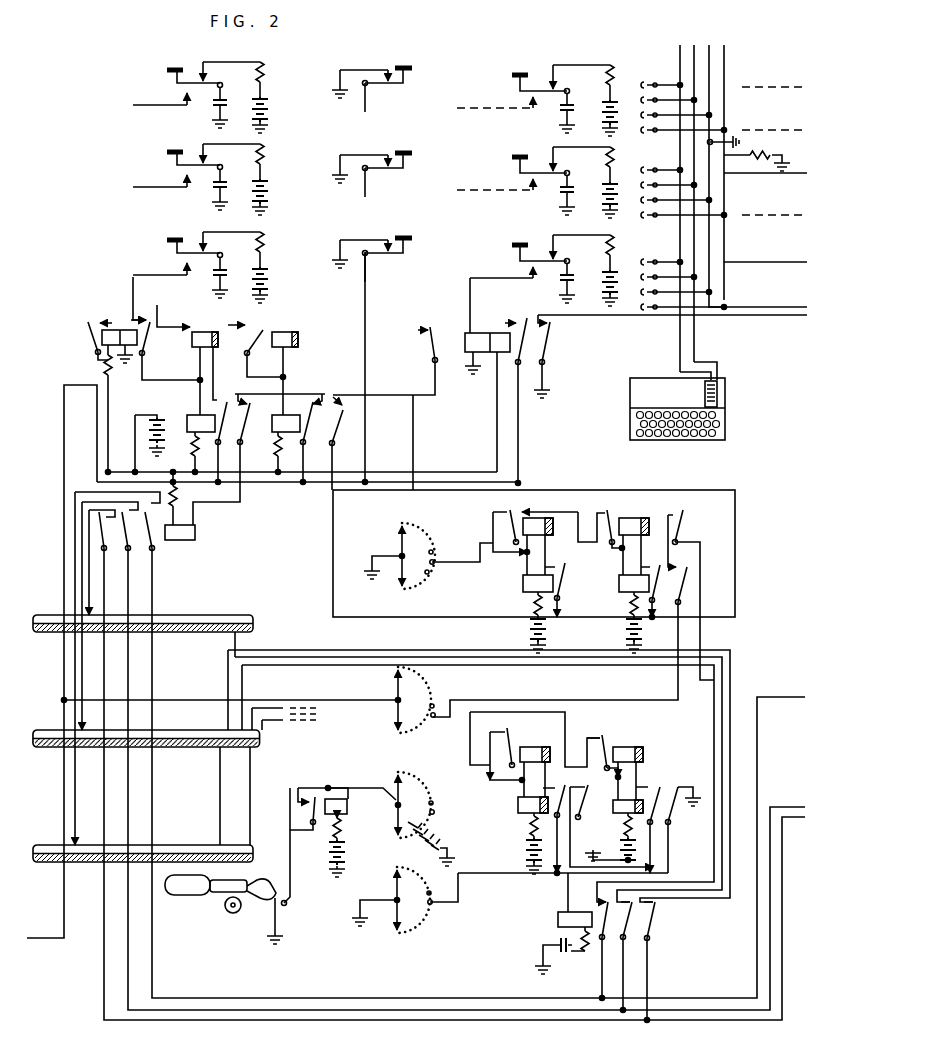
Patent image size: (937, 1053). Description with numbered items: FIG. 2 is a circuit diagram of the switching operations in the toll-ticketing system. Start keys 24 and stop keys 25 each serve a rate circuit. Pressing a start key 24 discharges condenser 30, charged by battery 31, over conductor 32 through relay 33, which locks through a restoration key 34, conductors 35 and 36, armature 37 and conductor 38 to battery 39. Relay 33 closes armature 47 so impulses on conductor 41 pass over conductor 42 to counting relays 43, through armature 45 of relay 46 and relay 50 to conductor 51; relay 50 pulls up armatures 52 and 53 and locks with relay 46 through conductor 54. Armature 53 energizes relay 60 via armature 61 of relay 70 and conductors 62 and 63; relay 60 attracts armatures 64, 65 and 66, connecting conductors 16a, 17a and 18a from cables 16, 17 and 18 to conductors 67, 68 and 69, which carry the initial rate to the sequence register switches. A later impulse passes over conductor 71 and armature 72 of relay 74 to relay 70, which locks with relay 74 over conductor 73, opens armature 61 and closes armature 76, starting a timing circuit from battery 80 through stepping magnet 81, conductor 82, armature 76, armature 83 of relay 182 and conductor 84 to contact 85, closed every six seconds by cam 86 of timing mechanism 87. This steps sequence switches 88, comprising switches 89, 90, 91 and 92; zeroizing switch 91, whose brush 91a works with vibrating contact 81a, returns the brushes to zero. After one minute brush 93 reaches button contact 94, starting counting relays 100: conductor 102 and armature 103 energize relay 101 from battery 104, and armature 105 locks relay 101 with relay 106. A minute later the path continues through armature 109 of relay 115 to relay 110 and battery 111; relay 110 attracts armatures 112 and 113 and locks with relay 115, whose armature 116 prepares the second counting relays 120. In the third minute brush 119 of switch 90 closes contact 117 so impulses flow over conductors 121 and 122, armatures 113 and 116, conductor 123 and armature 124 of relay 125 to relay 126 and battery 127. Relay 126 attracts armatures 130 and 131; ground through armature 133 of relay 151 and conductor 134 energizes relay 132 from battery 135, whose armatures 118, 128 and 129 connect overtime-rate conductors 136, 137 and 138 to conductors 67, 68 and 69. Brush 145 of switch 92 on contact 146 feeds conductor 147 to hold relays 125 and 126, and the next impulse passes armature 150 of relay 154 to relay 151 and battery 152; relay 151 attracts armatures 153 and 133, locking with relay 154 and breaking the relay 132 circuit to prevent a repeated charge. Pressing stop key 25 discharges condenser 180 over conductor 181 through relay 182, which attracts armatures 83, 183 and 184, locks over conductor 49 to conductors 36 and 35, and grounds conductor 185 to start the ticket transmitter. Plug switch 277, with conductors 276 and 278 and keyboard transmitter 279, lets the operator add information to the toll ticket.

The transistor input cell 24 is at (160, 90).
The transistor input cell 25 is at (510, 99).
The transistor cell 34 is at (386, 66).
The capacitor 30 is at (224, 262).
The battery 31 is at (266, 265).
The conductor 32 is at (130, 284).
The conductor 33 is at (100, 320).
The conductor 35 is at (367, 313).
The bus conductor 36 is at (295, 485).
The switch blade 37 is at (88, 342).
The conductor 38 is at (112, 404).
The battery 39 is at (142, 440).
The conductor 41 is at (44, 940).
The conductor 42 is at (162, 316).
The relay assembly 43 is at (290, 308).
The switch blade 45 is at (162, 322).
The relay coil 46 is at (212, 330).
The relay 47 is at (122, 318).
The conductor 49 is at (519, 413).
The relay 50 is at (190, 418).
The conductor 51 is at (252, 442).
The switch blade 52 is at (226, 402).
The switch blade 53 is at (250, 428).
The resistor 54 is at (207, 466).
The relay 60 is at (196, 532).
The relay 61 is at (302, 420).
The conductor 62 is at (298, 395).
The conductor 63 is at (240, 505).
The switch blade 64 is at (150, 545).
The switch blade 65 is at (126, 540).
The switch blade 66 is at (102, 540).
The conductor 67 is at (245, 997).
The conductor 68 is at (287, 1009).
The conductor 69 is at (347, 1019).
The switch blade 70 is at (290, 438).
The switch blade 71 is at (255, 328).
The relay coil 72 is at (282, 332).
The conductor 73 is at (286, 370).
The relay core 74 is at (299, 334).
The switch blade 76 is at (345, 409).
The battery 80 is at (345, 858).
The relay 81 is at (347, 807).
The switch blade 81a is at (310, 808).
The control unit 82 is at (335, 602).
The switch blade 83 is at (434, 326).
The conductor 84 is at (413, 425).
The contact 85 is at (288, 907).
The conductor 86 is at (290, 886).
The solenoid mechanism 87 is at (217, 898).
The selector switch 88 is at (412, 521).
The contact bank 89 is at (418, 578).
The selector switch 90 is at (430, 735).
The selector switch 91 is at (436, 804).
The conductor 91a is at (396, 788).
The selector switch 92 is at (418, 908).
The switch arm 93 is at (400, 555).
The contact 94 is at (436, 563).
The control circuit 100 is at (598, 497).
The relay 101 is at (528, 588).
The conductor 102 is at (482, 544).
The switch blade 103 is at (508, 510).
The battery 104 is at (548, 625).
The switch blade 105 is at (567, 570).
The relay coil 106 is at (558, 510).
The switch blade 109 is at (598, 512).
The relay 110 is at (627, 589).
The battery 111 is at (638, 632).
The switch blade 112 is at (660, 570).
The switch blade 113 is at (664, 580).
The switch blade 115 is at (648, 520).
The conductor 116 is at (683, 523).
The contact 117 is at (440, 710).
The switch blade 118 is at (640, 915).
The contact bank 119 is at (410, 694).
The relay 120 is at (626, 745).
The conductor 121 is at (336, 700).
The conductor 122 is at (550, 700).
The conductor 123 is at (714, 677).
The relay 124 is at (509, 752).
The switch blade 125 is at (530, 746).
The relay armature 126 is at (521, 815).
The battery 127 is at (522, 849).
The switch blade 128 is at (630, 925).
The switch blade 129 is at (650, 943).
The switch blade 130 is at (575, 798).
The switch blade 131 is at (581, 810).
The relay 132 is at (560, 913).
The switch blade 133 is at (676, 803).
The conductor 134 is at (668, 870).
The capacitor 135 is at (562, 950).
The conductor 136 is at (716, 736).
The conductor 137 is at (723, 768).
The conductor 138 is at (730, 800).
The contact bank 145 is at (407, 912).
The contact 146 is at (431, 904).
The conductor 147 is at (484, 878).
The switch blade 150 is at (618, 733).
The switch blade 151 is at (634, 800).
The battery 152 is at (615, 848).
The switch blade 153 is at (676, 792).
The relay core 154 is at (645, 751).
The capacitor 180 is at (575, 256).
The conductor 181 is at (496, 282).
The relay 182 is at (485, 357).
The switch blade 183 is at (530, 360).
The switch blade 184 is at (549, 333).
The conductor 185 is at (785, 318).
The conductor 276 is at (738, 262).
The contact bank 277 is at (665, 262).
The conductor 278 is at (738, 307).
The keyboard 279 is at (727, 411).
The track rail 16 is at (170, 634).
The track rail 17 is at (173, 749).
The track rail 18 is at (168, 846).
The conductor 16a is at (88, 572).
The conductor 17a is at (81, 664).
The conductor 18a is at (73, 812).